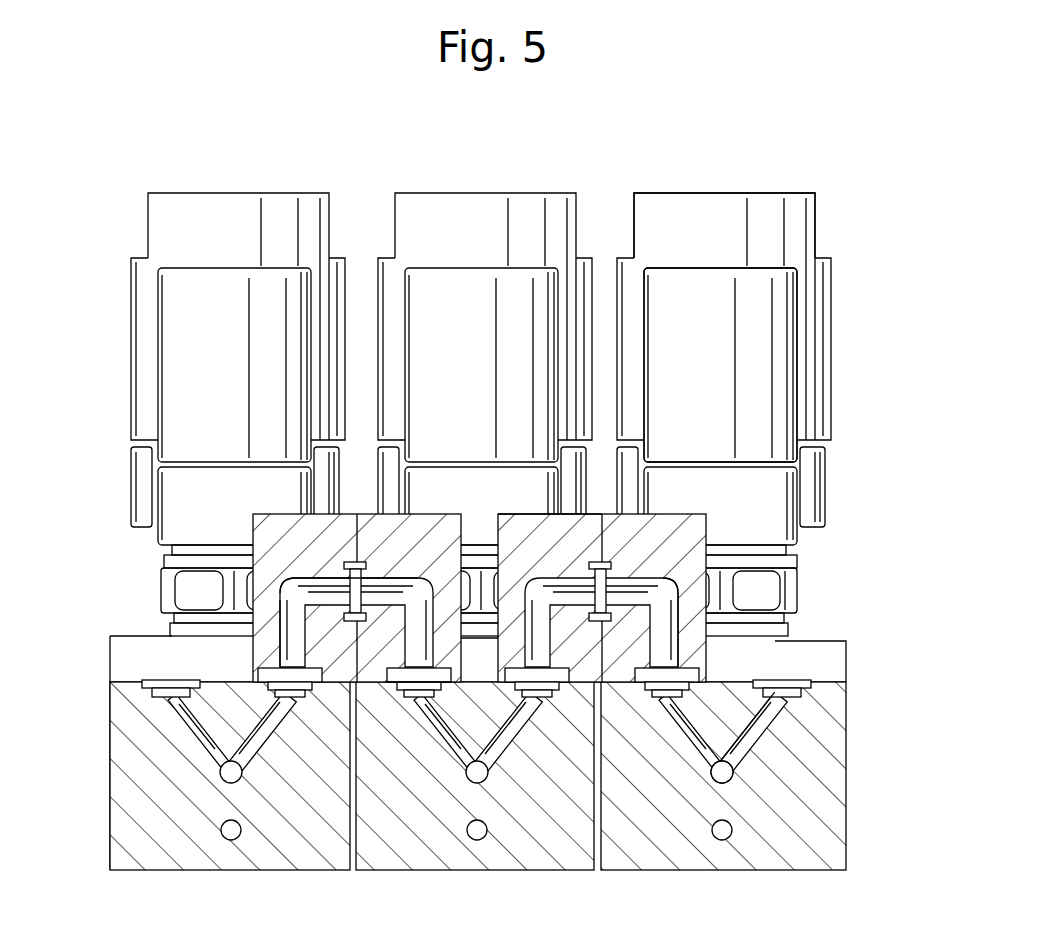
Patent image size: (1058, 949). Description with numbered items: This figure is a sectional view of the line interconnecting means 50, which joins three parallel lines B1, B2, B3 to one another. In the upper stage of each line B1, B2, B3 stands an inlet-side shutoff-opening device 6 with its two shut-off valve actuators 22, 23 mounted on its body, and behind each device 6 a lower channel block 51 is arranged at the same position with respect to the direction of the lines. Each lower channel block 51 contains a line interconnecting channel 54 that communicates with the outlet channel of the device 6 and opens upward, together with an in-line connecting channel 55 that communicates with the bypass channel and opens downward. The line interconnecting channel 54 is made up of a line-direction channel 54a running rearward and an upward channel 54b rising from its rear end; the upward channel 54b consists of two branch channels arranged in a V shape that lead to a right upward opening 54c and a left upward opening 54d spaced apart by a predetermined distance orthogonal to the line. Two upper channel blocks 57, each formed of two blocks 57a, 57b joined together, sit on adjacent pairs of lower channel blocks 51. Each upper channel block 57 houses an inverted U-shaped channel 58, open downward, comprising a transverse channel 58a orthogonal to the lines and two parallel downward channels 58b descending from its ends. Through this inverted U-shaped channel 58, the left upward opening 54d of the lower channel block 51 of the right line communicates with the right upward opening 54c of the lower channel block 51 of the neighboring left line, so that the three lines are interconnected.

The inlet-side shutoff-opening device 6 is at (480, 396).
The shut-off valve actuator 22 is at (777, 306).
The shut-off valve actuator 23 is at (797, 236).
The line interconnecting means 50 is at (140, 617).
The lower channel block 51 is at (132, 757).
The line interconnecting channel 54 is at (260, 740).
The line-direction channel 54a is at (735, 790).
The upward channel 54b is at (775, 712).
The right upward opening 54c is at (215, 680).
The left upward opening 54d is at (400, 690).
The in-line connecting channel 55 is at (481, 840).
The upper channel block 57 is at (680, 528).
The block 57a is at (690, 587).
The block 57b is at (518, 528).
The inverted U-shaped channel 58 is at (683, 638).
The transverse channel 58a is at (297, 576).
The downward channel 58b is at (283, 618).
The line B1 is at (770, 188).
The line B2 is at (543, 188).
The line B3 is at (308, 188).